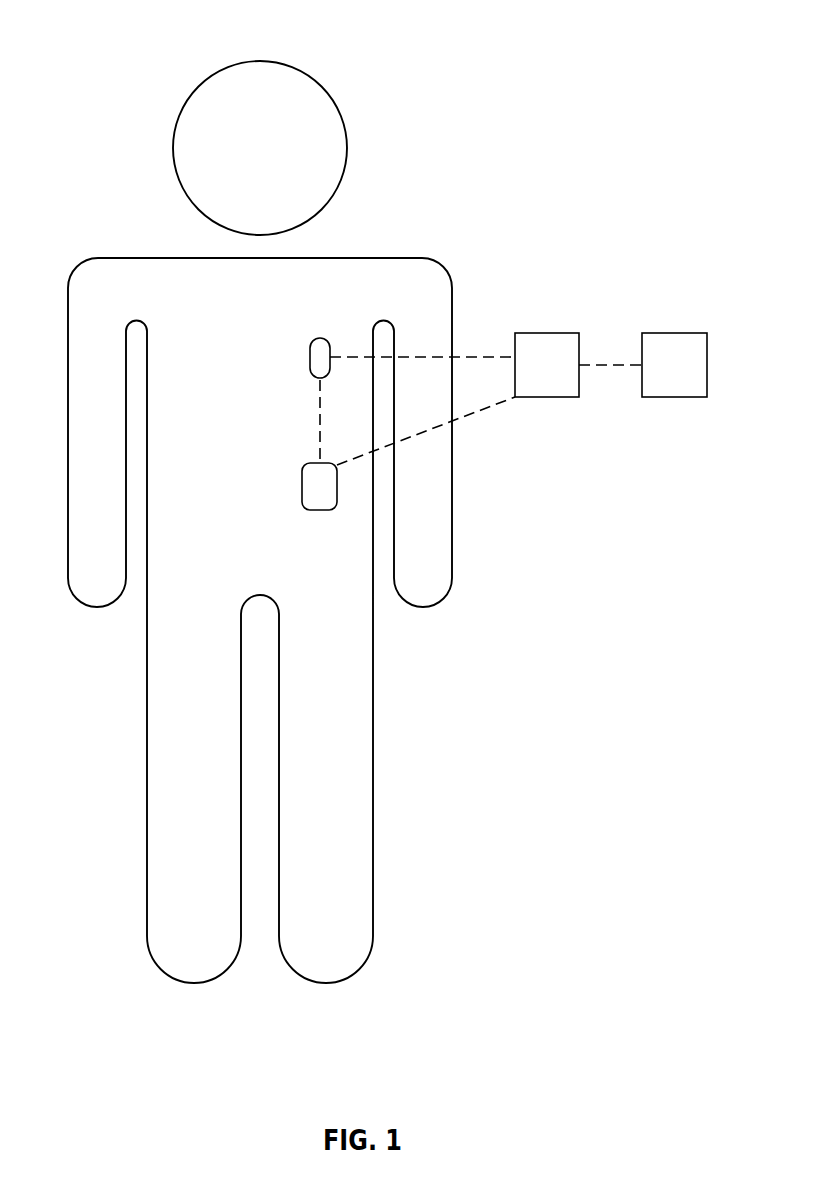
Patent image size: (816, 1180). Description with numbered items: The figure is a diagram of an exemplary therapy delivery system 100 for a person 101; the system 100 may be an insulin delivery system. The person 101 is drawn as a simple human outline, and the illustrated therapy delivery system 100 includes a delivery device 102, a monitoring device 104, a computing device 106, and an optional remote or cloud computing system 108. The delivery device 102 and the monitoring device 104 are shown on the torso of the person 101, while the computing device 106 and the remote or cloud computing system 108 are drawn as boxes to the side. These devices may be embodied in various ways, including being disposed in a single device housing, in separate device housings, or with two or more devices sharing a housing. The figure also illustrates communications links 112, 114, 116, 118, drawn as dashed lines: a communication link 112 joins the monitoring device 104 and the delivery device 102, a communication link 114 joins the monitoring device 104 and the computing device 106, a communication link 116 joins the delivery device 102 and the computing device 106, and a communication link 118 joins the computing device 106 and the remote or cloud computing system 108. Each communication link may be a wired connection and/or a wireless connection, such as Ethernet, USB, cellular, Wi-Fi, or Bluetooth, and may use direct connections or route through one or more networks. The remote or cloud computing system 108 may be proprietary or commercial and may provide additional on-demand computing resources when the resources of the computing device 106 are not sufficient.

The therapy delivery system 100 is at (597, 43).
The person 101 is at (121, 258).
The delivery device 102 is at (316, 511).
The monitoring device 104 is at (320, 338).
The computing device 106 is at (547, 333).
The remote or cloud computing system 108 is at (676, 333).
The communication link 112 is at (318, 420).
The communication link 114 is at (468, 356).
The communication link 116 is at (478, 412).
The communication link 118 is at (598, 367).